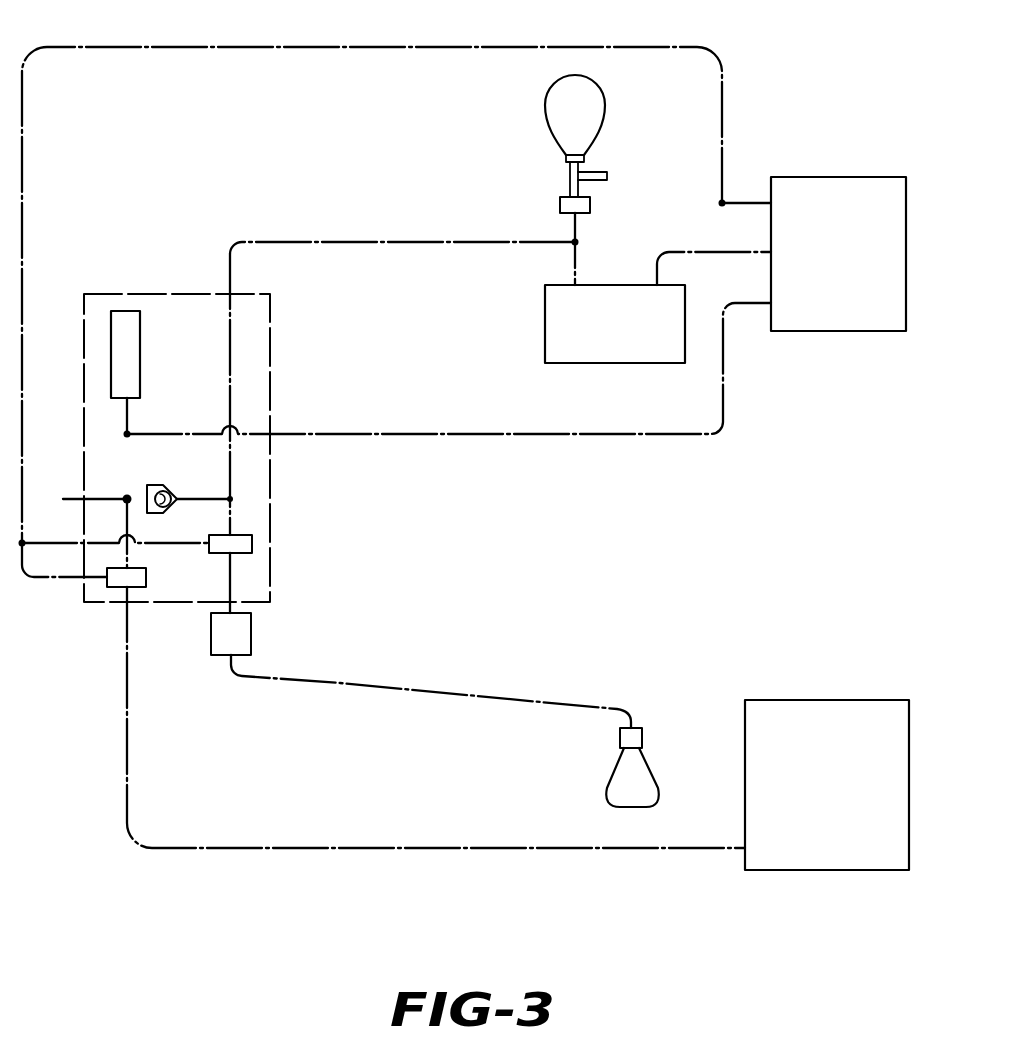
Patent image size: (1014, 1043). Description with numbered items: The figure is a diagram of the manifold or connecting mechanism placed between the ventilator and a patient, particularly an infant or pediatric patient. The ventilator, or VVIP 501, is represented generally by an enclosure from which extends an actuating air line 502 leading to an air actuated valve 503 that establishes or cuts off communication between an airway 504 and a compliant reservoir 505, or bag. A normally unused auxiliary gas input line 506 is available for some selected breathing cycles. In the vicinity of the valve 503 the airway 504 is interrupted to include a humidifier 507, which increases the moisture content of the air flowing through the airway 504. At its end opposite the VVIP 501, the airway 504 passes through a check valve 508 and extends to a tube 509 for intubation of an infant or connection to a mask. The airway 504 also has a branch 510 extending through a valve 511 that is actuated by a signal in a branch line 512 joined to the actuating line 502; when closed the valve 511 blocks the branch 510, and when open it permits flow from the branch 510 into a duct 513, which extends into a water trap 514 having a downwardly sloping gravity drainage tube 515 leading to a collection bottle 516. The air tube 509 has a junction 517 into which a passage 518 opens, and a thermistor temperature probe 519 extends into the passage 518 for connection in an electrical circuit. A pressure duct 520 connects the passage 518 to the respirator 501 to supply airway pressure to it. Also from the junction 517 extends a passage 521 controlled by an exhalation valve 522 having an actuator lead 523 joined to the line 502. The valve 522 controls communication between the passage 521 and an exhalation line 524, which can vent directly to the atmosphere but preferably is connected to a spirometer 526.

The VVIP 501 is at (855, 152).
The actuating air line 502 is at (372, 46).
The air actuated valve 503 is at (561, 204).
The airway 504 is at (405, 214).
The compliant reservoir 505 is at (593, 104).
The auxiliary gas input line 506 is at (594, 172).
The humidifier 507 is at (545, 313).
The check valve 508 is at (167, 478).
The tube 509 is at (77, 496).
The branch 510 is at (229, 518).
The valve 511 is at (212, 554).
The branch line 512 is at (73, 541).
The duct 513 is at (262, 578).
The water trap 514 is at (247, 641).
The gravity drainage tube 515 is at (413, 664).
The collection bottle 516 is at (612, 779).
The junction 517 is at (124, 494).
The passage 518 is at (128, 421).
The thermistor temperature probe 519 is at (135, 341).
The pressure duct 520 is at (407, 405).
The passage 521 is at (130, 553).
The exhalation valve 522 is at (118, 589).
The actuator lead 523 is at (75, 580).
The exhalation line 524 is at (127, 722).
The spirometer 526 is at (840, 673).